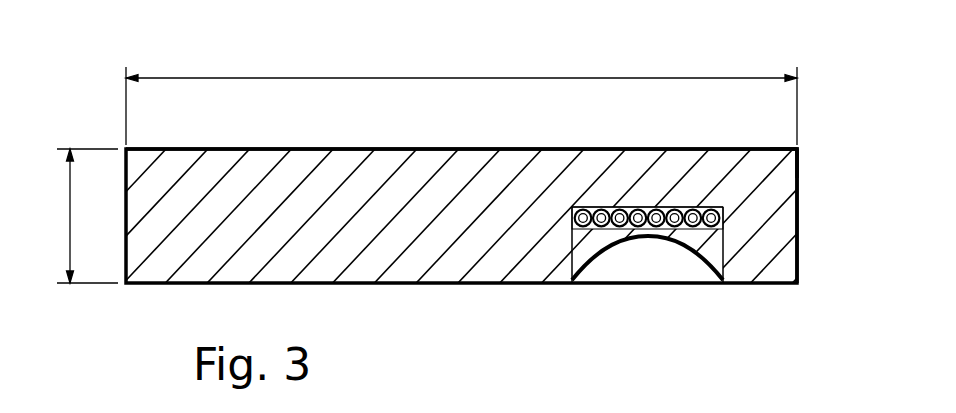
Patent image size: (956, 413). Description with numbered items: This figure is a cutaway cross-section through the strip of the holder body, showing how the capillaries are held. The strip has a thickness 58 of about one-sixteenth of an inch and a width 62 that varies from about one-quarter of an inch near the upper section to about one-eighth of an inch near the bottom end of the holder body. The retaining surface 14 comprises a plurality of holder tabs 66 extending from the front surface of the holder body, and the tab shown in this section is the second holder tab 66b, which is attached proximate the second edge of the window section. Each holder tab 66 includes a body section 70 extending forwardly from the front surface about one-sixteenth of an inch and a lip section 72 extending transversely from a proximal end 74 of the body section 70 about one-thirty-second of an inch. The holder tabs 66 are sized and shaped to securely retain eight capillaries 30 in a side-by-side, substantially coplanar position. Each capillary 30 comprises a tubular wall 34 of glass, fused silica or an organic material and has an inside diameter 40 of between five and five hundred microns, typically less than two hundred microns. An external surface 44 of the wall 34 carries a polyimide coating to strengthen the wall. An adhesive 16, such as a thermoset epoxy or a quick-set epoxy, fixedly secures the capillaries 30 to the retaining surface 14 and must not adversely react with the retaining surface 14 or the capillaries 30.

The retaining surface 14 is at (697, 203).
The adhesive 16 is at (618, 233).
The capillary 30 is at (603, 200).
The tubular wall 34 is at (660, 206).
The inside diameter 40 is at (692, 236).
The external surface 44 is at (650, 207).
The thickness 58 is at (69, 222).
The width 62 is at (447, 78).
The holder tab 66 is at (810, 195).
The second holder tab 66b is at (798, 256).
The body section 70 is at (420, 152).
The lip section 72 is at (783, 230).
The proximal end 74 is at (802, 143).